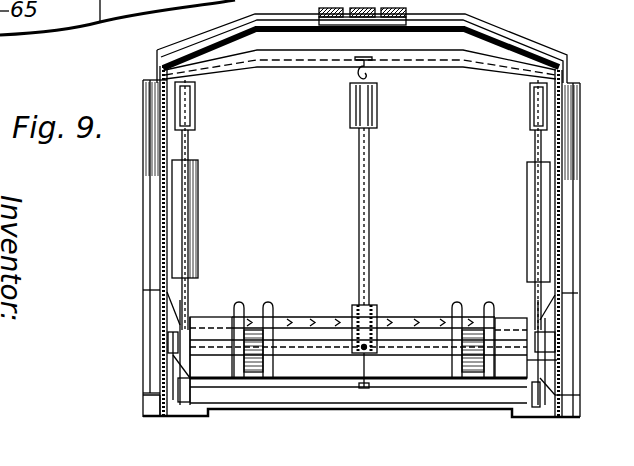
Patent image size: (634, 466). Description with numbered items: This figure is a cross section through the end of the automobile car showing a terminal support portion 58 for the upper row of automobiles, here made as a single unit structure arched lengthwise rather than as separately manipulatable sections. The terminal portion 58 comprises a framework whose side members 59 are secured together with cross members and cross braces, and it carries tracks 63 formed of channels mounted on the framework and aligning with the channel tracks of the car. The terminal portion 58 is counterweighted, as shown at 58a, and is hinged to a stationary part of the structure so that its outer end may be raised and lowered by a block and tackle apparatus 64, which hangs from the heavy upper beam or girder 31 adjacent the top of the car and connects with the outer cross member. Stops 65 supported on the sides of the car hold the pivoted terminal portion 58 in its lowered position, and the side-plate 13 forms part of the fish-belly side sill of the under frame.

The side-plate 13 is at (633, 276).
The upper beam or girder 31 is at (415, 57).
The terminal portion 58 is at (275, 323).
The counterweight 58a is at (197, 230).
The side member 59 is at (193, 396).
The track 63 is at (271, 303).
The block and tackle apparatus 64 is at (371, 165).
The stop 65 is at (163, 414).